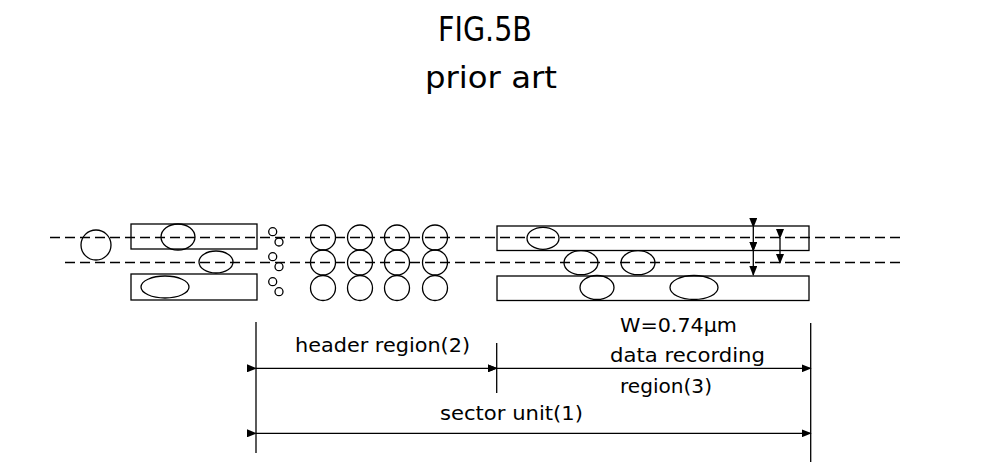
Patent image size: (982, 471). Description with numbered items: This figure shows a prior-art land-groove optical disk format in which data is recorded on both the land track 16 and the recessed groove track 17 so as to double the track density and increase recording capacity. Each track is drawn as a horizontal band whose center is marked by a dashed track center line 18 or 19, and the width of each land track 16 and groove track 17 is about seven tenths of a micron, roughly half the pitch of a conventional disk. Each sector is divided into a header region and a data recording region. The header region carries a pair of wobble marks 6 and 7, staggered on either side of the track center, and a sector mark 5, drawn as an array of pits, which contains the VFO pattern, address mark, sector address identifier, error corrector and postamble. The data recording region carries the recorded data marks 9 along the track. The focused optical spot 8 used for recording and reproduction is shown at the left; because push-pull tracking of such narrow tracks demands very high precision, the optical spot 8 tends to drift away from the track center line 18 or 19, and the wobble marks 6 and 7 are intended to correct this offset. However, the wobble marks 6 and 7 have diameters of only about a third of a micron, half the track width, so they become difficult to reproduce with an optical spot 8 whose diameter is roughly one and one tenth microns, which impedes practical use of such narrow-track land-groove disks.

The sector mark 5 is at (477, 210).
The wobble mark 6 is at (273, 227).
The wobble mark 7 is at (282, 237).
The optical spot 8 is at (100, 230).
The data mark 9 is at (550, 227).
The land track 16 is at (608, 262).
The groove track 17 is at (707, 226).
The track center line 18 is at (857, 263).
The track center line 19 is at (853, 237).